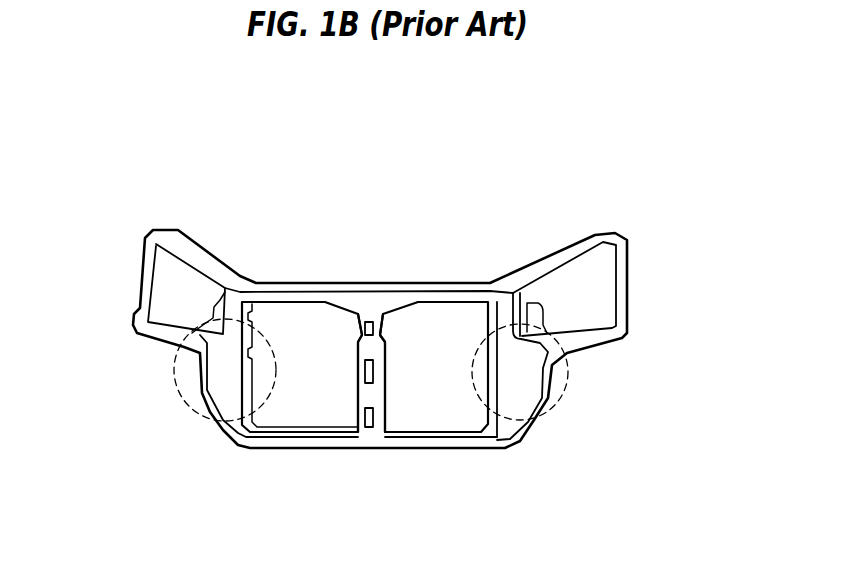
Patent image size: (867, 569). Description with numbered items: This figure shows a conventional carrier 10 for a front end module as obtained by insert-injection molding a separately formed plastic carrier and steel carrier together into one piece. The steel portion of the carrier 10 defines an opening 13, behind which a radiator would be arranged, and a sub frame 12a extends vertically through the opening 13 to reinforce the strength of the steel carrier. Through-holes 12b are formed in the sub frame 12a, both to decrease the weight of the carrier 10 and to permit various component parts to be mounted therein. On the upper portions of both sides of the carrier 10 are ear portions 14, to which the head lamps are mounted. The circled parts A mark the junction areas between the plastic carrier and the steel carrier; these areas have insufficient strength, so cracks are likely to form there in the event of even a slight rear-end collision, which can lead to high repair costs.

The carrier 10 is at (370, 248).
The sub frame 12a is at (363, 393).
The through-holes 12b is at (368, 430).
The opening 13 is at (445, 328).
The ear portions 14 is at (147, 237).
The parts A is at (192, 405).